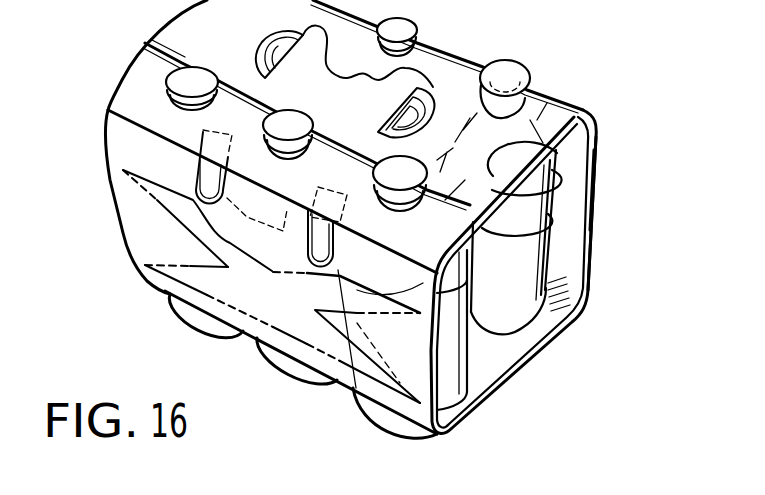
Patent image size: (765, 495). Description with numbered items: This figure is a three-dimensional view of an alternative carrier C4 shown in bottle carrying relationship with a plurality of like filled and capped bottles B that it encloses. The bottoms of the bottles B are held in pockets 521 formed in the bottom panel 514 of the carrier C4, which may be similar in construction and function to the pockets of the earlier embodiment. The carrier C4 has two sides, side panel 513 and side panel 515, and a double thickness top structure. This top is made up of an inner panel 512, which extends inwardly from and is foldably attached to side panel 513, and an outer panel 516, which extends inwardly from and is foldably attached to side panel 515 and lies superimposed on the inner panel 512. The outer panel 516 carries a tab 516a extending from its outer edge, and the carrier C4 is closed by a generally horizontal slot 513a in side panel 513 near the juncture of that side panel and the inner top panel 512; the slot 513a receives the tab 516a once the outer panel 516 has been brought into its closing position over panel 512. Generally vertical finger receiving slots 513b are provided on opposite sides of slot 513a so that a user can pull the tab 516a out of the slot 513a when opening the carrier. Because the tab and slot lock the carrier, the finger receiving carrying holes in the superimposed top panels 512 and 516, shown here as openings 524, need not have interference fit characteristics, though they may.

The inner panel 512 is at (557, 140).
The side panel 513 is at (108, 192).
The horizontal slot 513a is at (247, 192).
The finger receiving slots 513b is at (310, 272).
The bottom panel 514 is at (535, 355).
The side panel 515 is at (598, 134).
The outer panel 516 is at (545, 120).
The tab 516a is at (241, 237).
The pockets 521 is at (352, 390).
The openings in top wall 524 is at (345, 82).
The bottles B is at (562, 265).
The carrier C4 is at (606, 215).